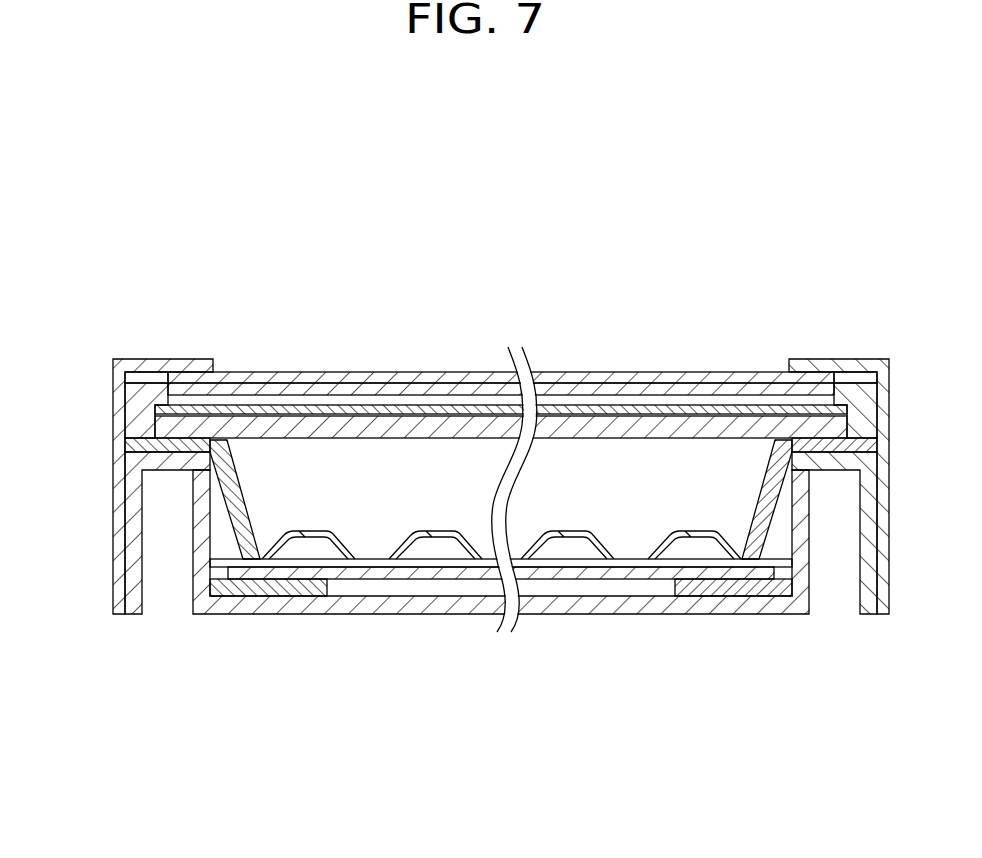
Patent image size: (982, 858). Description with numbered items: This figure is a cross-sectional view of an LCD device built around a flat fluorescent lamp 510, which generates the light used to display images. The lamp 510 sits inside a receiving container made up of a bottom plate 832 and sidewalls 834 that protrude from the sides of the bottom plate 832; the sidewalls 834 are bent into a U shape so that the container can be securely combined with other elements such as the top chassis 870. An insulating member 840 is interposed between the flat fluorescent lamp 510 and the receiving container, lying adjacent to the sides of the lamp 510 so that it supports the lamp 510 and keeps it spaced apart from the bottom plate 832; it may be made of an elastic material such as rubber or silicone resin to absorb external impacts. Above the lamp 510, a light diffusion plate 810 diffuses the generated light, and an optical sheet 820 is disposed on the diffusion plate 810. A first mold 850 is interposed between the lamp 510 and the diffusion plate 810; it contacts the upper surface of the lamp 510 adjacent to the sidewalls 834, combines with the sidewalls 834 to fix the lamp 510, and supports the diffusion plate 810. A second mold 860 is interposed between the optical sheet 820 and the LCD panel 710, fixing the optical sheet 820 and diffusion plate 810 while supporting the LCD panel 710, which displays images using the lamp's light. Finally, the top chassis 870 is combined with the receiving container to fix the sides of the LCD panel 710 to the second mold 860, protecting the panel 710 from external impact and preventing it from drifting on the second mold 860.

The top chassis 870 is at (135, 366).
The second mold 860 is at (138, 404).
The first mold 850 is at (135, 445).
The LCD panel 710 is at (436, 378).
The optical sheet 820 is at (603, 410).
The light diffusion plate 810 is at (690, 432).
The sidewalls 834 is at (176, 460).
The bottom plate 832 is at (368, 605).
The insulating member 840 is at (262, 588).
The flat fluorescent lamp 510 is at (452, 582).